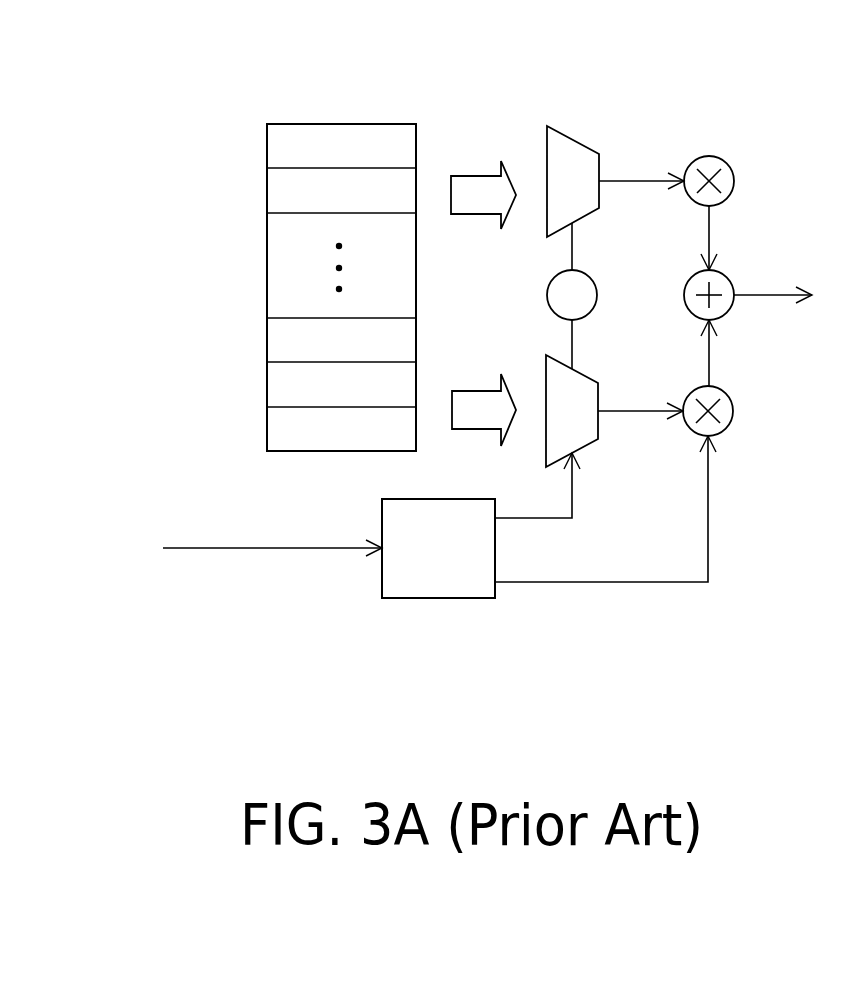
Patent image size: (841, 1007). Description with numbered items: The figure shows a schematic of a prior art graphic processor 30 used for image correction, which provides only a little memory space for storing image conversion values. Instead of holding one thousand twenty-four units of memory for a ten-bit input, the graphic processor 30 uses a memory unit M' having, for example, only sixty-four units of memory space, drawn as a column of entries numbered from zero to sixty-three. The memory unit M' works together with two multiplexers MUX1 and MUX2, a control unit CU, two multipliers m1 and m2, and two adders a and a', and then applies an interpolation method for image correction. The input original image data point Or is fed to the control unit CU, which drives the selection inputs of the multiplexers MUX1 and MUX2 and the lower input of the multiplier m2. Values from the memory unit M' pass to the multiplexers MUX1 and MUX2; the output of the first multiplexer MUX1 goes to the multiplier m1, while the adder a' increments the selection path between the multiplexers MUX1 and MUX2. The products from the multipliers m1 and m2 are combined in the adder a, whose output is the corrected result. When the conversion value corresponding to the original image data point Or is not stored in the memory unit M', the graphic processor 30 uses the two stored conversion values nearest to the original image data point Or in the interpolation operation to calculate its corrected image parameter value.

The memory unit M' is at (341, 239).
The first multiplexer MUX1 is at (575, 137).
The second multiplexer MUX2 is at (586, 446).
The first multiplier m1 is at (717, 160).
The second multiplier m2 is at (724, 390).
The adder a is at (748, 273).
The second adder a' is at (584, 294).
The control unit CU is at (436, 598).
The original image data point Or is at (257, 547).
The graphic processor 30 is at (235, 655).